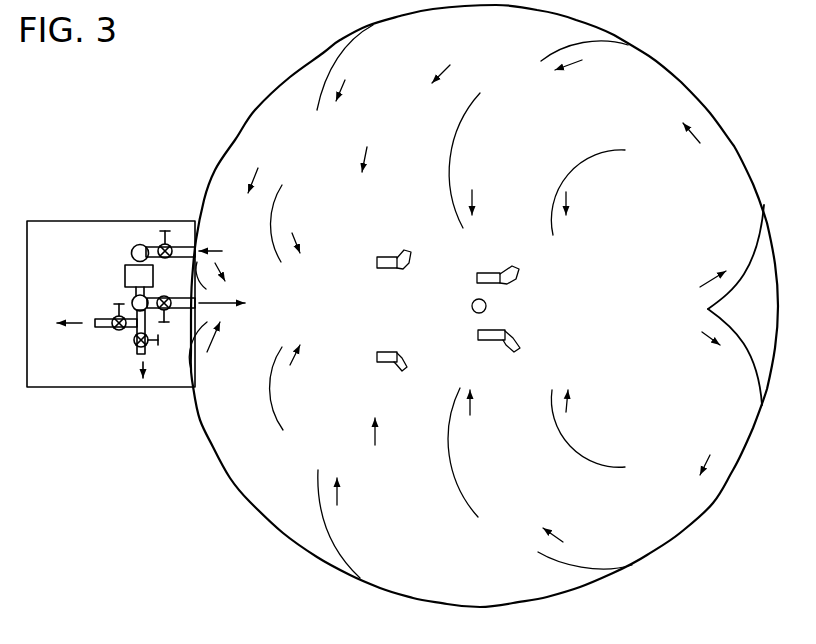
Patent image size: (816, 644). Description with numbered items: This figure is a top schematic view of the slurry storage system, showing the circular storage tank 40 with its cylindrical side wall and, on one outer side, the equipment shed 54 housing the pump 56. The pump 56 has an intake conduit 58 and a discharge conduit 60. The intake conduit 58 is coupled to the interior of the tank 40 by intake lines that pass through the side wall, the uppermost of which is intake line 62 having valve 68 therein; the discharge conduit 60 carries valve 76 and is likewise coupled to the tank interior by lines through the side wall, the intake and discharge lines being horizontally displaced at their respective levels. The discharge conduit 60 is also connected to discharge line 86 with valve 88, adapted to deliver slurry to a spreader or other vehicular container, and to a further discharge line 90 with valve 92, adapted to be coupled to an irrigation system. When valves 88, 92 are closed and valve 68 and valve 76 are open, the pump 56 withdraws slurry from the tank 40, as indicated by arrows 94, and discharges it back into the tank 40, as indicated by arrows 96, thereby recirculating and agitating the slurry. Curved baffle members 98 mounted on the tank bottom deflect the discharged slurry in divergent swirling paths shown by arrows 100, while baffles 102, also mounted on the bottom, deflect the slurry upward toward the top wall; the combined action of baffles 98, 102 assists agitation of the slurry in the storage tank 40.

The slurry storage tank 40 is at (699, 90).
The equipment shed 54 is at (78, 258).
The pump 56 is at (125, 276).
The intake conduit 58 is at (132, 249).
The discharge conduit 60 is at (132, 301).
The intake line 62 is at (190, 246).
The valve 68 is at (162, 244).
The valve 76 is at (158, 299).
The discharge line 86 is at (98, 330).
The valve 88 is at (117, 333).
The discharge line 90 is at (155, 373).
The valve 92 is at (150, 342).
The arrows 94 is at (222, 252).
The arrows 96 is at (233, 303).
The curved baffle members 98 is at (598, 44).
The arrows 100 is at (473, 195).
The baffles 102 is at (400, 250).